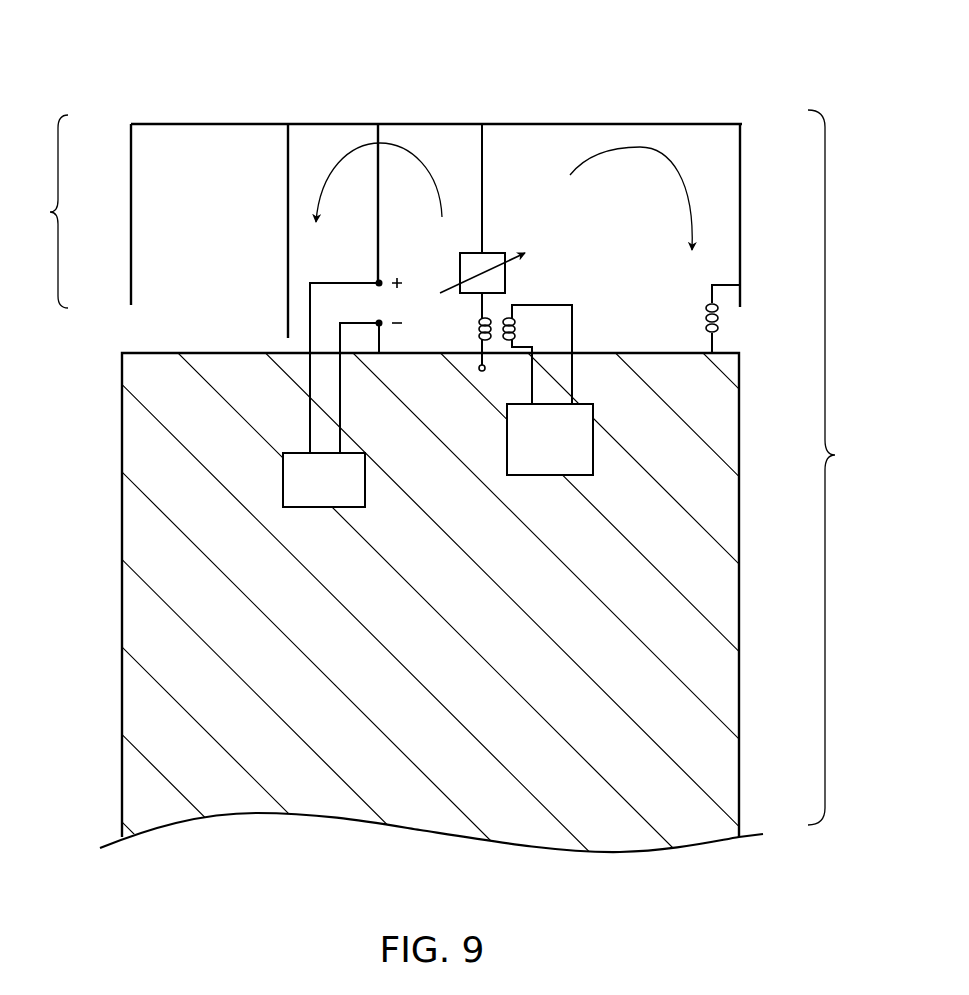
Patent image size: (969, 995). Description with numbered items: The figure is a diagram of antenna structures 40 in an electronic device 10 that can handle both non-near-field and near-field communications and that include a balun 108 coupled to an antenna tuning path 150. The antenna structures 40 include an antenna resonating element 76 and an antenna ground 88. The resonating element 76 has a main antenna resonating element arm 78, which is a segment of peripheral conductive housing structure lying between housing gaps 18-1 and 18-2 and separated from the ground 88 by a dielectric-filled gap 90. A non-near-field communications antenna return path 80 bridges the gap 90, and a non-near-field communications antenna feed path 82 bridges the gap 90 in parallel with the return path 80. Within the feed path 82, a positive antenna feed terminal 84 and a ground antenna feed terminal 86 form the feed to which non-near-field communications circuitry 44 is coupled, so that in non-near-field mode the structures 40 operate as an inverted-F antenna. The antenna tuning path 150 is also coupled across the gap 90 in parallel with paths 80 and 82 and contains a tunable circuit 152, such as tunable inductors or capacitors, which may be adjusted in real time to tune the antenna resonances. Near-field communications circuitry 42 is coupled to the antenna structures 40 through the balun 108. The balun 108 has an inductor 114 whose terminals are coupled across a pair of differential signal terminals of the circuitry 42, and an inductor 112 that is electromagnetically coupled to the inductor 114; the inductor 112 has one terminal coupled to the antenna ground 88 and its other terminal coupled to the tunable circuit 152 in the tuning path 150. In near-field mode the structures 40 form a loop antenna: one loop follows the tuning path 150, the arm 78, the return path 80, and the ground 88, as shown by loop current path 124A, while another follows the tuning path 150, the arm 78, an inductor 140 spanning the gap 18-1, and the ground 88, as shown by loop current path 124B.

The electronic device 10 is at (837, 467).
The peripheral conductive housing structure gap 18-1 is at (748, 323).
The peripheral conductive housing structure gap 18-2 is at (112, 318).
The antenna structures 40 is at (418, 172).
The near-field communications circuitry 42 is at (535, 476).
The non-near-field communications circuitry 44 is at (328, 508).
The antenna resonating element 76 is at (43, 211).
The main antenna resonating element arm 78 is at (519, 123).
The non-near-field communications antenna return path 80 is at (288, 211).
The non-near-field communications antenna feed path 82 is at (390, 253).
The positive antenna feed terminal 84 is at (378, 282).
The ground antenna feed terminal 86 is at (381, 323).
The antenna ground 88 is at (132, 487).
The gap 90 is at (225, 143).
The balun 108 is at (502, 367).
The inductor 112 is at (477, 340).
The inductor 114 is at (510, 322).
The loop current path 124A is at (360, 147).
The loop current path 124B is at (647, 147).
The inductor 140 is at (688, 313).
The antenna tuning path 150 is at (497, 173).
The tunable circuit 152 is at (498, 242).